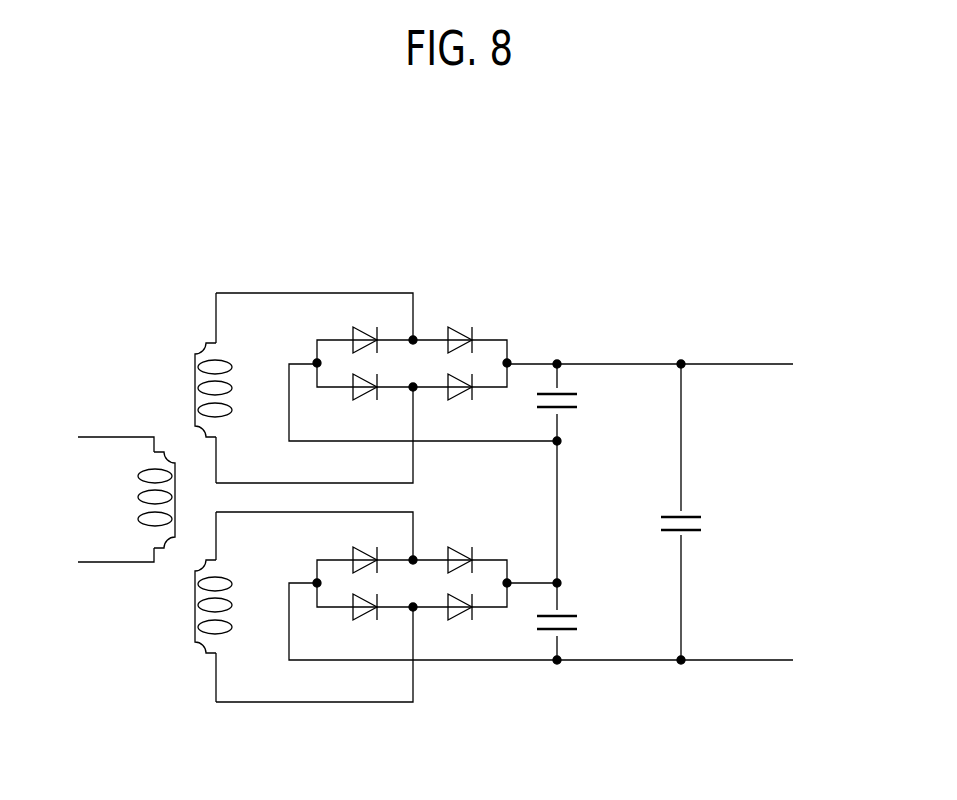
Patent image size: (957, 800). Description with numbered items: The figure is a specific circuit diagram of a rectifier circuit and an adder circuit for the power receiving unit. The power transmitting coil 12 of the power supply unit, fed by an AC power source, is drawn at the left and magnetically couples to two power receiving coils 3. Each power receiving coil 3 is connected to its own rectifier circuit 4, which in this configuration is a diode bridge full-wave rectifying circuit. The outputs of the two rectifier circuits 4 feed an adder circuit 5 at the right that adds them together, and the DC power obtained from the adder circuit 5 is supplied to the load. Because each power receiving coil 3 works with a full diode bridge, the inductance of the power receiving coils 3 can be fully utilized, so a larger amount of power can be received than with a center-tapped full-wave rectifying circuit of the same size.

The power receiving coil 3 is at (198, 343).
The rectifier circuit 4 is at (515, 272).
The adder circuit 5 is at (708, 303).
The power transmitting coil 12 is at (173, 547).